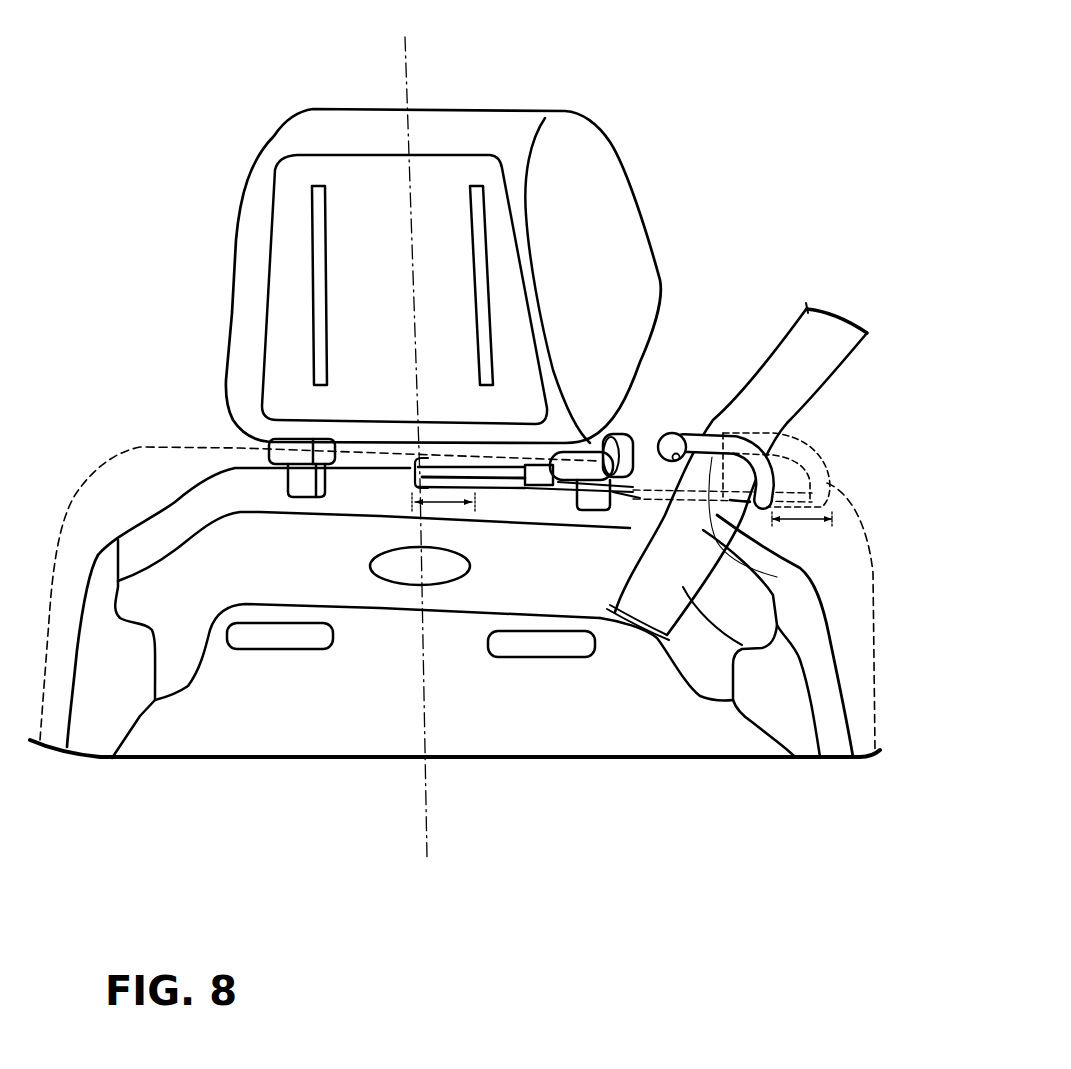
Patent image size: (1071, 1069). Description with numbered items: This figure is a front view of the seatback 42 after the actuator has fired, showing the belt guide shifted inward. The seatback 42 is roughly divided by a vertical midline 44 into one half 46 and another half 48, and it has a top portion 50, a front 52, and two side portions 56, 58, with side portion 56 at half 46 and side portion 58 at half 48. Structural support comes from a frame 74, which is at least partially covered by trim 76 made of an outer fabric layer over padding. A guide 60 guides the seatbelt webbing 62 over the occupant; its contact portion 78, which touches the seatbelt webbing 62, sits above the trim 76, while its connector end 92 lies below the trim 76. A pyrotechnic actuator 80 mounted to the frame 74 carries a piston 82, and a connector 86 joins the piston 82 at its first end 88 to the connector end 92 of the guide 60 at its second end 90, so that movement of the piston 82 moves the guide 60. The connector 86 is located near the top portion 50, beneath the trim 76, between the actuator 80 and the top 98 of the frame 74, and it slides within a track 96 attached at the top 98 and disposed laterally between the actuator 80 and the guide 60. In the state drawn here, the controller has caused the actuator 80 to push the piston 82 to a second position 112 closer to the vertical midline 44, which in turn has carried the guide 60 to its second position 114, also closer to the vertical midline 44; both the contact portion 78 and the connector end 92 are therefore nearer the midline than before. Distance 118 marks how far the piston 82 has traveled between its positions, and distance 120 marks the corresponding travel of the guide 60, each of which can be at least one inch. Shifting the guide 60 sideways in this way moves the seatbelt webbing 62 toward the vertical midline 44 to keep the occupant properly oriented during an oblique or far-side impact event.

The seatback 42 is at (172, 175).
The vertical midline 44 is at (407, 57).
The one half 46 is at (753, 733).
The another half 48 is at (103, 727).
The top portion 50 is at (192, 440).
The front 52 is at (562, 700).
The side portion 56 is at (875, 700).
The side portion 58 is at (45, 578).
The guide 60 is at (703, 423).
The seatbelt webbing 62 is at (784, 352).
The frame 74 is at (283, 570).
The trim 76 is at (827, 483).
The contact portion 78 is at (790, 600).
The actuator 80 is at (540, 470).
The piston 82 is at (473, 466).
The connector 86 is at (688, 432).
The first end 88 is at (416, 459).
The second end 90 is at (785, 570).
The connector end 92 is at (787, 510).
The track 96 is at (660, 425).
The top 98 is at (362, 483).
The second position 112 is at (405, 492).
The second position 114 is at (712, 457).
The distance 118 is at (432, 505).
The distance 120 is at (778, 530).